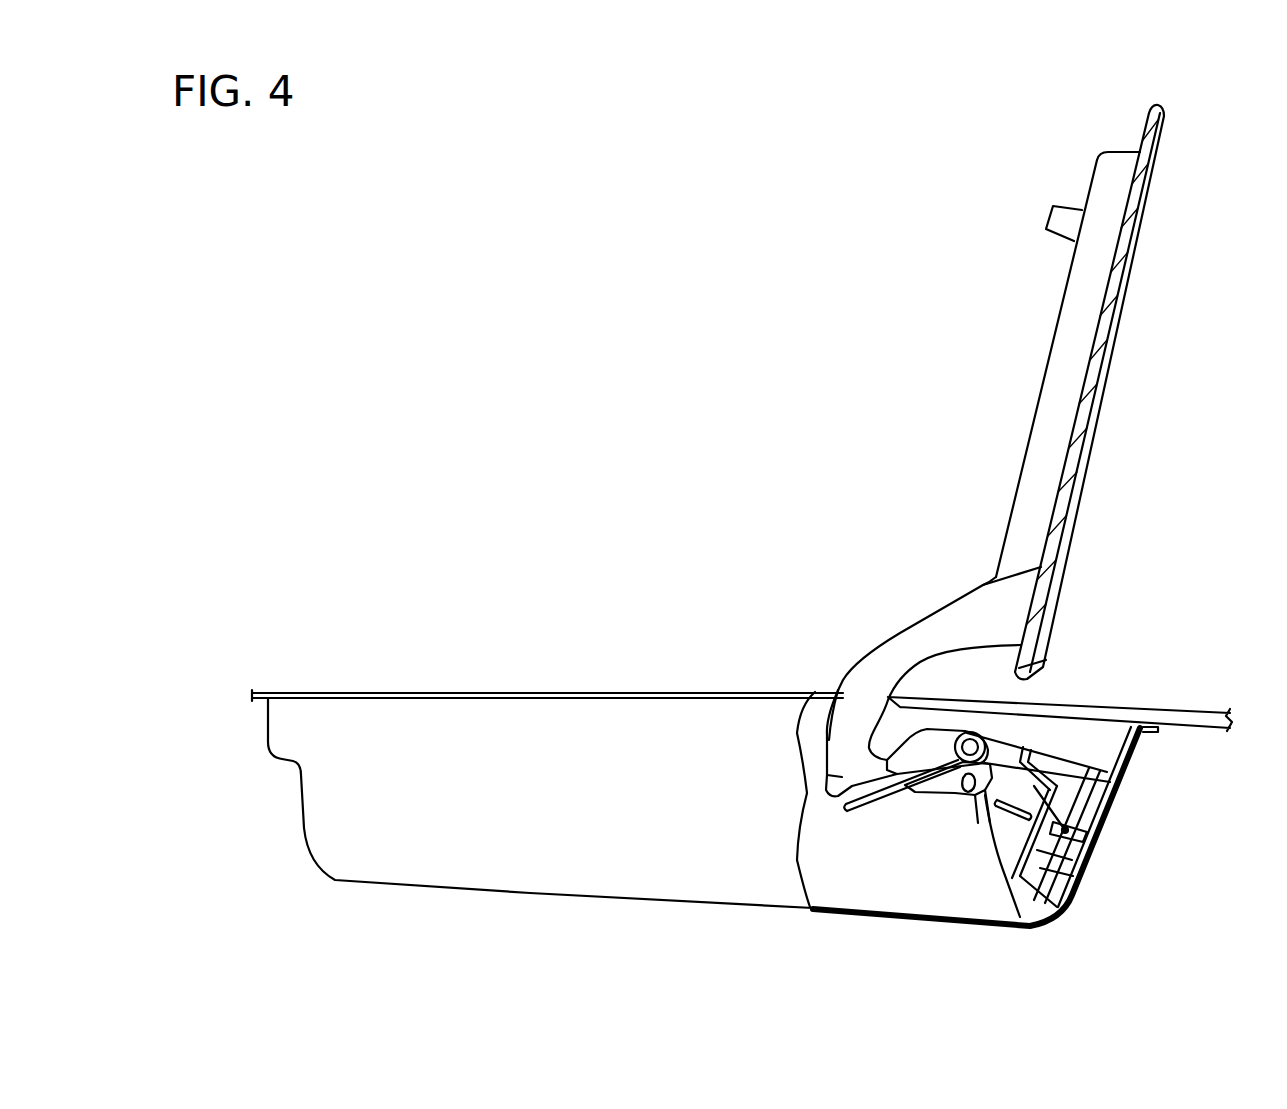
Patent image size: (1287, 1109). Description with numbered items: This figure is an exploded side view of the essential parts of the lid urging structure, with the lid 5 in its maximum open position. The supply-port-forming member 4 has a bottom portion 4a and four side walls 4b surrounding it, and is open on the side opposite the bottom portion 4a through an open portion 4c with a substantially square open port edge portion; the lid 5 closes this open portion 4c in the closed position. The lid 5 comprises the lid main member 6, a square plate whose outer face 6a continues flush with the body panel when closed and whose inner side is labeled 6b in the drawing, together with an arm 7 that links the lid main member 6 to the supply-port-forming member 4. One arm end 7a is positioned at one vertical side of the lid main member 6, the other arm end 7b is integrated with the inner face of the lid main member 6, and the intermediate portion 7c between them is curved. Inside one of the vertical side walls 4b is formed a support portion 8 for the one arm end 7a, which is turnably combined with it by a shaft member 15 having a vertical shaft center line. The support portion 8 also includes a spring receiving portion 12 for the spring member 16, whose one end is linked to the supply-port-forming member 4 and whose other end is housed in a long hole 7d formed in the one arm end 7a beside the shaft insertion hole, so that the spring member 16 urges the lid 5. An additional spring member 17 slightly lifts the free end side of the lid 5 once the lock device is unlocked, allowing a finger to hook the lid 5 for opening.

The supply-port-forming member 4 is at (575, 898).
The bottom portion 4a is at (722, 910).
The side walls 4b is at (300, 810).
The open portion 4c is at (812, 702).
The lid 5 is at (1110, 370).
The lid main member 6 is at (1121, 392).
The outer face 6a is at (1097, 433).
The back pad 6b is at (1058, 318).
The arm 7 is at (920, 612).
The one arm end 7a is at (987, 825).
The other arm end 7b is at (1030, 602).
The intermediate portion 7c is at (862, 656).
The long hole 7d is at (970, 792).
The support portion 8 is at (1034, 786).
The spring receiving portion 12 is at (1098, 847).
The shaft member 15 is at (978, 733).
The spring member 16 is at (1043, 795).
The additional spring member 17 is at (858, 808).